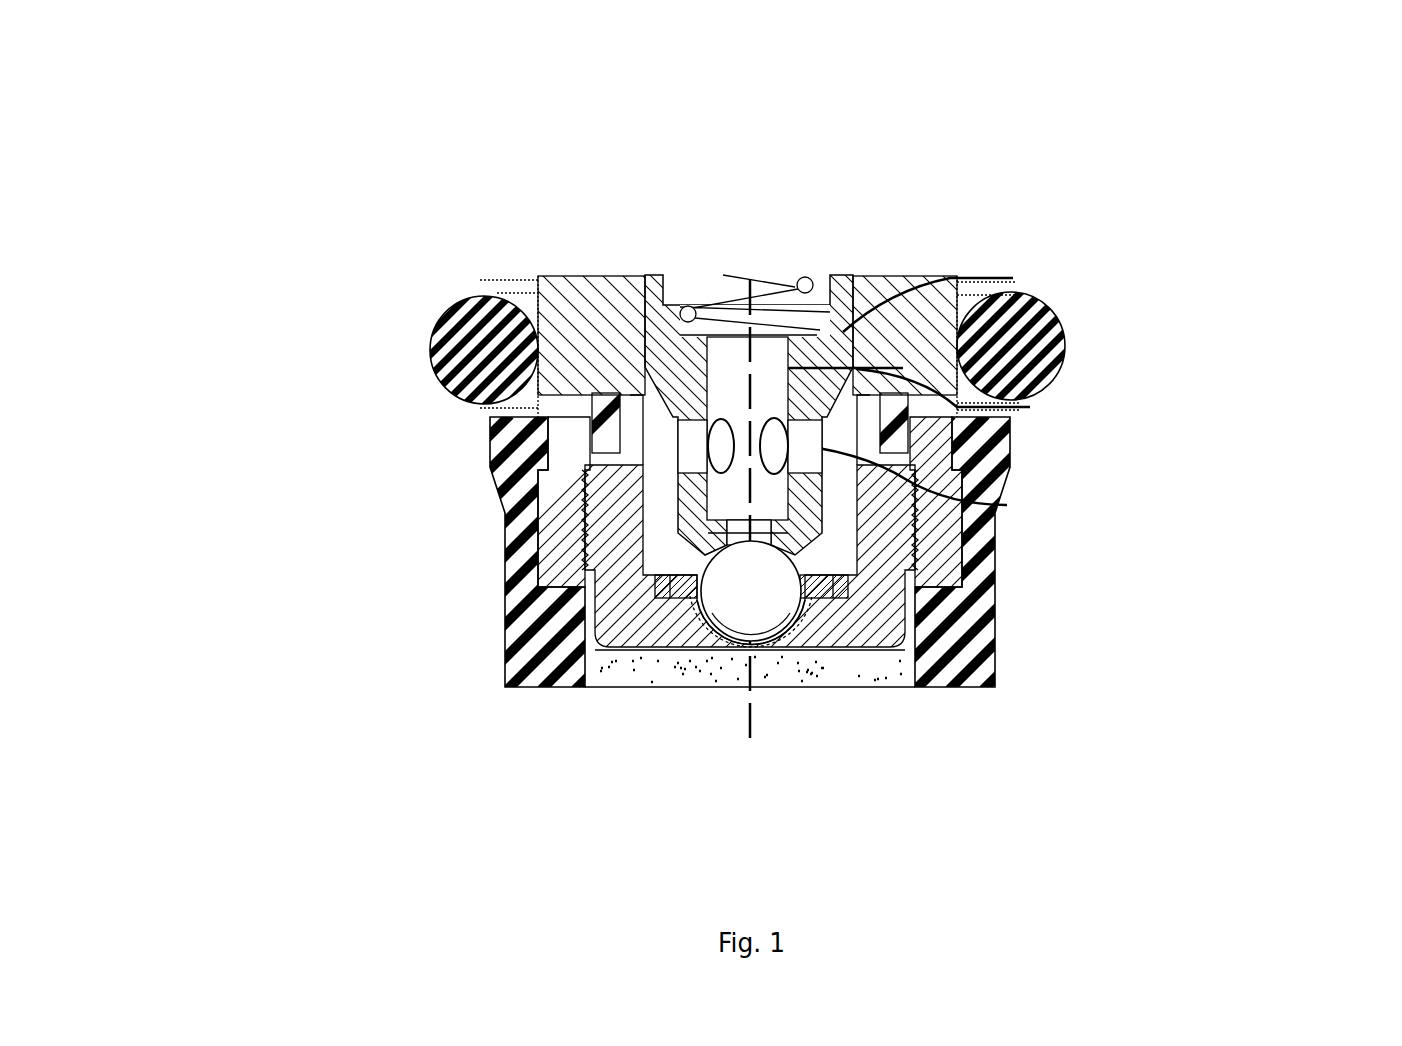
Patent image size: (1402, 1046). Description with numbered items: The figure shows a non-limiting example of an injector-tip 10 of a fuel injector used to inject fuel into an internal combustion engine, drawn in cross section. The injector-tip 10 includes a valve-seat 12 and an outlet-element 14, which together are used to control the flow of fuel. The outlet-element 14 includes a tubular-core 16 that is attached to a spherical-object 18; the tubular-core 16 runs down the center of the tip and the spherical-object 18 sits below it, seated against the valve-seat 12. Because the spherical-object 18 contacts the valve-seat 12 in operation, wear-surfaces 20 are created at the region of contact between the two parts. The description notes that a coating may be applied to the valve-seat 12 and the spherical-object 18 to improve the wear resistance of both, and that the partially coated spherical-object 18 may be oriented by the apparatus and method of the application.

The injector-tip 10 is at (237, 141).
The valve-seat 12 is at (802, 603).
The outlet-element 14 is at (842, 555).
The tubular-core 16 is at (683, 365).
The spherical-object 18 is at (763, 600).
The wear-surfaces 20 is at (712, 625).